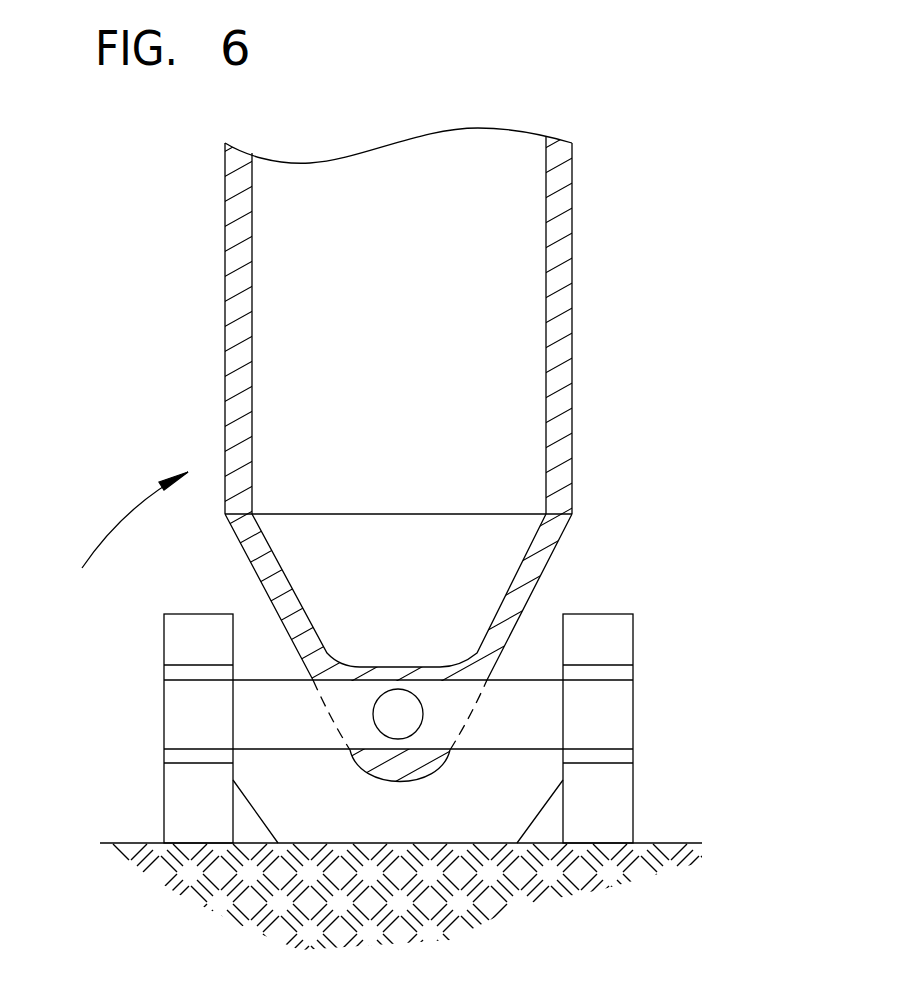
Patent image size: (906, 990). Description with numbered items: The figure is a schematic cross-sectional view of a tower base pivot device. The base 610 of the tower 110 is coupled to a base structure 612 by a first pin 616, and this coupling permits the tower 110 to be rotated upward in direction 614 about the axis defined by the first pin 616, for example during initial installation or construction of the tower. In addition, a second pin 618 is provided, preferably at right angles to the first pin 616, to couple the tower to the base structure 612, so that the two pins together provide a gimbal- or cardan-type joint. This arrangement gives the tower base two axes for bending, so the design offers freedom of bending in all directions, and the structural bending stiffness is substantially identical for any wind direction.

The tower 110 is at (560, 463).
The base 610 is at (530, 570).
The base structure 612 is at (688, 671).
The direction 614 is at (132, 513).
The first pin 616 is at (383, 725).
The second pin 618 is at (177, 690).